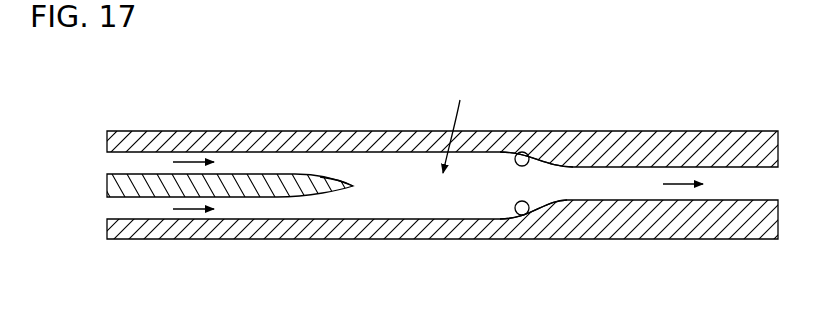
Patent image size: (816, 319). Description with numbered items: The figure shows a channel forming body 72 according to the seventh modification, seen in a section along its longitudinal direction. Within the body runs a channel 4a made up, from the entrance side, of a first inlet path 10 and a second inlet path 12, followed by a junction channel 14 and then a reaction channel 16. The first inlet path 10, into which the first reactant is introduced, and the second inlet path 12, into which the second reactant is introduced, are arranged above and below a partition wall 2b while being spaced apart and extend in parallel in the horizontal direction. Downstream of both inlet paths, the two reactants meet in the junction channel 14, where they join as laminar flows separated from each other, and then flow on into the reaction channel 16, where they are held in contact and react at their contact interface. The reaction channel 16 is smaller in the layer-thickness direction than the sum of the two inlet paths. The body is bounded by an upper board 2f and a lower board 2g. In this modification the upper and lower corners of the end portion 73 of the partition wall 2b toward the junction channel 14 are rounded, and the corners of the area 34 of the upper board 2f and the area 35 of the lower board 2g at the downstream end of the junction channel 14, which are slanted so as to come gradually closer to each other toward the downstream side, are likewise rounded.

The channel forming body 72 is at (219, 110).
The first inlet path 10 is at (139, 163).
The second inlet path 12 is at (148, 208).
The partition wall 2b is at (233, 188).
The end portion of the partition wall 73 is at (332, 186).
The junction channel 14 is at (413, 187).
The channel 4a is at (459, 123).
The area of the upper board 34 is at (517, 152).
The area of the lower board 35 is at (520, 215).
The upper board 2f is at (580, 130).
The lower board 2g is at (595, 238).
The reaction channel 16 is at (645, 183).